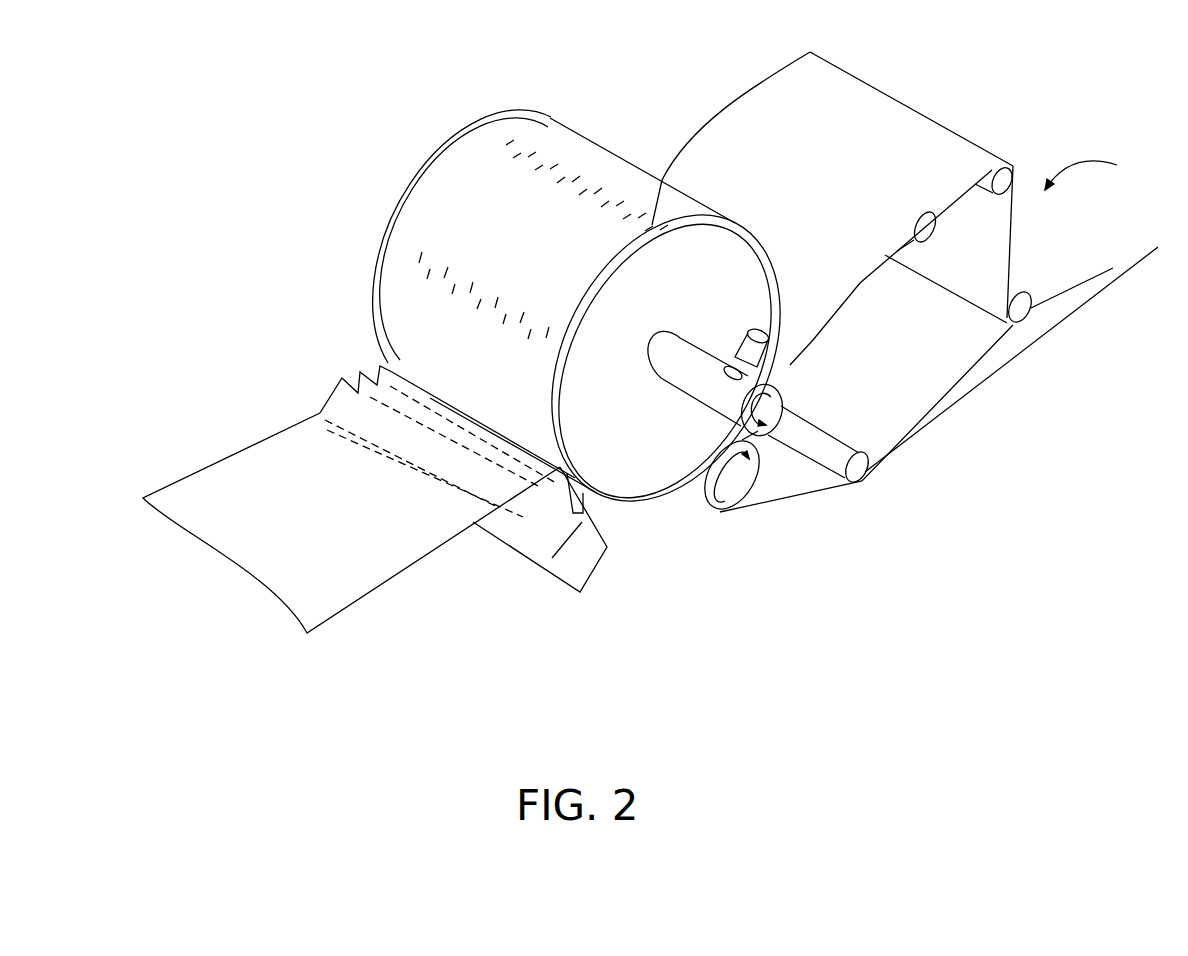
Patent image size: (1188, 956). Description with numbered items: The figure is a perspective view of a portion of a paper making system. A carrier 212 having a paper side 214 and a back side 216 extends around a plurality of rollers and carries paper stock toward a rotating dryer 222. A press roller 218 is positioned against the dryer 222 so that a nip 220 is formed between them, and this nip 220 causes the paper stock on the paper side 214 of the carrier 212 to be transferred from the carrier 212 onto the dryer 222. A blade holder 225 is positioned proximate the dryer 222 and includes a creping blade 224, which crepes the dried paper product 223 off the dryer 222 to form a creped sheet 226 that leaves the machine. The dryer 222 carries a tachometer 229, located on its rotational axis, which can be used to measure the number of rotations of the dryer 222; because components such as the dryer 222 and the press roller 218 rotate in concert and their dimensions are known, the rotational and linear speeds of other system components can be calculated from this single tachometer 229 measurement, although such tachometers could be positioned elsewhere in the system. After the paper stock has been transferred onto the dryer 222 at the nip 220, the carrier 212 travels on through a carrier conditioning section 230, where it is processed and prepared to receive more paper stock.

The carrier 212 is at (922, 405).
The paper side 214 is at (827, 169).
The back side 216 is at (921, 360).
The press roller 218 is at (743, 483).
The nip 220 is at (690, 483).
The dryer 222 is at (462, 143).
The dried paper product 223 is at (462, 202).
The creping blade 224 is at (387, 368).
The blade holder 225 is at (545, 537).
The creped sheet 226 is at (293, 445).
The tachometer 229 is at (752, 345).
The carrier conditioning section 230 is at (1103, 173).